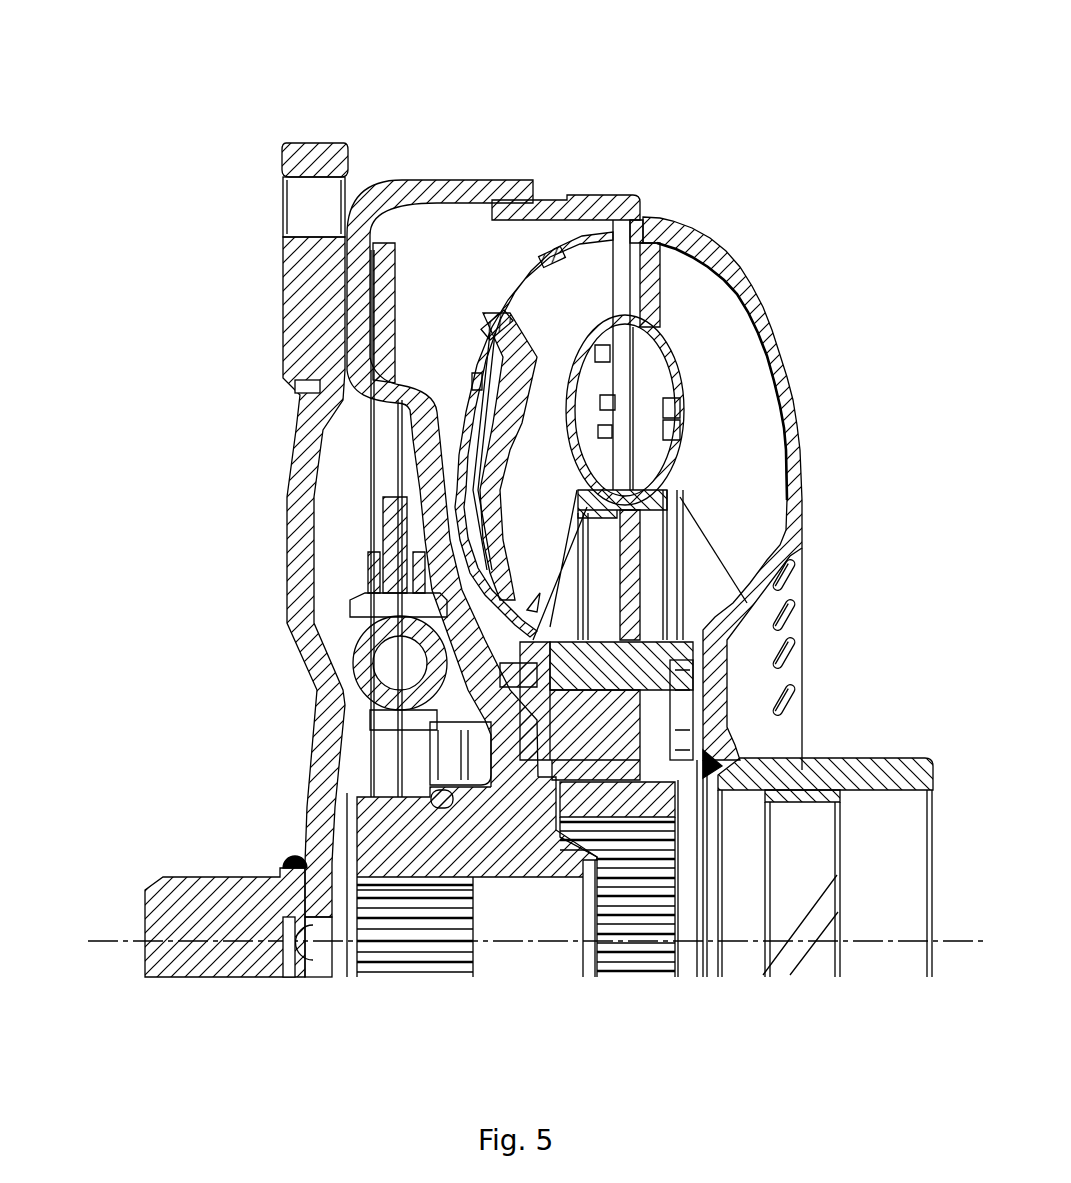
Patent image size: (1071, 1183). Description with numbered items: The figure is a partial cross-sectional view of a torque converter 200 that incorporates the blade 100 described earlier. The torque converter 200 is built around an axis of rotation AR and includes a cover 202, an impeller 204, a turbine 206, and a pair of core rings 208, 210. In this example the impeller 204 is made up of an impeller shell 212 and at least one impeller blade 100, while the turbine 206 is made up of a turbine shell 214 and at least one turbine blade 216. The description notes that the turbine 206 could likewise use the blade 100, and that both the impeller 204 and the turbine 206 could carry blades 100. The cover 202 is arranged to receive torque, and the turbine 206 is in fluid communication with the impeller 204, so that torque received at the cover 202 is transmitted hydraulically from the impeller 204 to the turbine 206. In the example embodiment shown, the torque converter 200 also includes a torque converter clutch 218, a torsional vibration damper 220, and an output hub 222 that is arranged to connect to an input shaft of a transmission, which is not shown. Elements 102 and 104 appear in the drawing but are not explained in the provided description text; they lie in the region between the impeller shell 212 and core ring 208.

The blade 100 is at (730, 368).
The spring 102 is at (683, 410).
The spring retainer 104 is at (672, 425).
The torque converter 200 is at (848, 192).
The cover 202 is at (483, 180).
The impeller 204 is at (742, 280).
The turbine 206 is at (507, 300).
The core ring 208 is at (738, 278).
The core ring 210 is at (605, 322).
The impeller shell 212 is at (778, 357).
The turbine shell 214 is at (467, 407).
The turbine blade 216 is at (562, 297).
The torque converter clutch 218 is at (352, 228).
The torsional vibration damper 220 is at (357, 540).
The output hub 222 is at (410, 833).
The axis of rotation AR is at (858, 943).